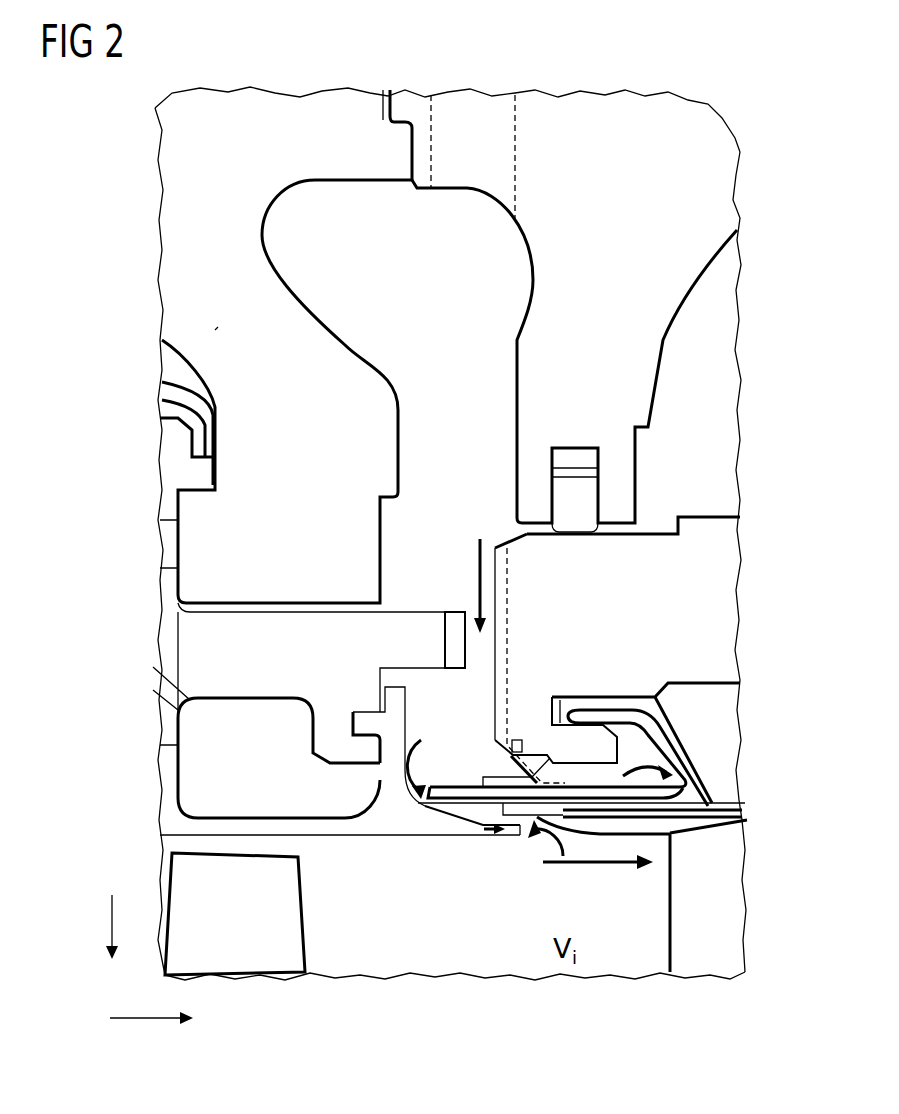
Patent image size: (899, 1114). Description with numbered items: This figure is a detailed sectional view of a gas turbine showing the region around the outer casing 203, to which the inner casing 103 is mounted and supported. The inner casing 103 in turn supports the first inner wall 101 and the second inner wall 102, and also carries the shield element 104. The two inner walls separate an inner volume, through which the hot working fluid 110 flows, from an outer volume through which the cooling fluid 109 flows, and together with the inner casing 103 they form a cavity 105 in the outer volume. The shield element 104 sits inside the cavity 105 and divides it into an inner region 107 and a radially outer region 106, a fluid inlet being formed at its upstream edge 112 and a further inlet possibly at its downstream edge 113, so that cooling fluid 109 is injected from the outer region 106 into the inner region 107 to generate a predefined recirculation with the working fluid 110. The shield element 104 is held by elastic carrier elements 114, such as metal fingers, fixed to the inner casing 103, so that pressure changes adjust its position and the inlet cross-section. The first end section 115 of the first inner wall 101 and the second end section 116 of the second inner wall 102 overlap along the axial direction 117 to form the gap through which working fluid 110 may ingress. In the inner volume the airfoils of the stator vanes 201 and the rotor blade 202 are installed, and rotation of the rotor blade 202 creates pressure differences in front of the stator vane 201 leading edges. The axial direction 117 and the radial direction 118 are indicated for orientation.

The first inner wall 101 is at (298, 827).
The second inner wall 102 is at (680, 826).
The inner casing 103 is at (282, 610).
The shield element 104 is at (473, 770).
The cavity 105 is at (460, 350).
The outer region 106 is at (432, 678).
The inner region 107 is at (456, 812).
The cooling fluid 109 is at (478, 568).
The working fluid 110 is at (590, 867).
The upstream edge 112 is at (438, 780).
The downstream edge 113 is at (683, 790).
The carrier element 114 is at (583, 756).
The first end section 115 is at (475, 838).
The second end section 116 is at (525, 810).
The axial direction 117 is at (151, 1046).
The radial direction 118 is at (79, 926).
The stator vane 201 is at (712, 965).
The rotor blade 202 is at (247, 968).
The outer casing 203 is at (218, 327).